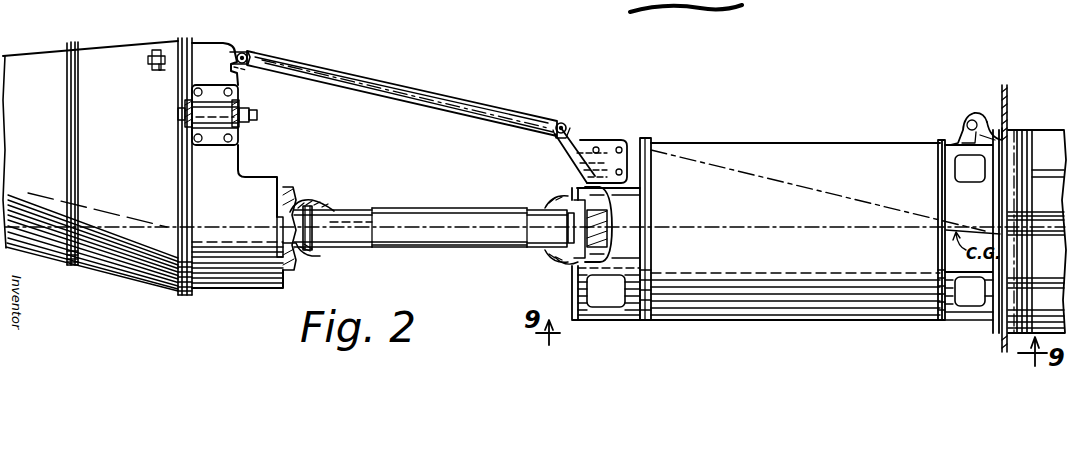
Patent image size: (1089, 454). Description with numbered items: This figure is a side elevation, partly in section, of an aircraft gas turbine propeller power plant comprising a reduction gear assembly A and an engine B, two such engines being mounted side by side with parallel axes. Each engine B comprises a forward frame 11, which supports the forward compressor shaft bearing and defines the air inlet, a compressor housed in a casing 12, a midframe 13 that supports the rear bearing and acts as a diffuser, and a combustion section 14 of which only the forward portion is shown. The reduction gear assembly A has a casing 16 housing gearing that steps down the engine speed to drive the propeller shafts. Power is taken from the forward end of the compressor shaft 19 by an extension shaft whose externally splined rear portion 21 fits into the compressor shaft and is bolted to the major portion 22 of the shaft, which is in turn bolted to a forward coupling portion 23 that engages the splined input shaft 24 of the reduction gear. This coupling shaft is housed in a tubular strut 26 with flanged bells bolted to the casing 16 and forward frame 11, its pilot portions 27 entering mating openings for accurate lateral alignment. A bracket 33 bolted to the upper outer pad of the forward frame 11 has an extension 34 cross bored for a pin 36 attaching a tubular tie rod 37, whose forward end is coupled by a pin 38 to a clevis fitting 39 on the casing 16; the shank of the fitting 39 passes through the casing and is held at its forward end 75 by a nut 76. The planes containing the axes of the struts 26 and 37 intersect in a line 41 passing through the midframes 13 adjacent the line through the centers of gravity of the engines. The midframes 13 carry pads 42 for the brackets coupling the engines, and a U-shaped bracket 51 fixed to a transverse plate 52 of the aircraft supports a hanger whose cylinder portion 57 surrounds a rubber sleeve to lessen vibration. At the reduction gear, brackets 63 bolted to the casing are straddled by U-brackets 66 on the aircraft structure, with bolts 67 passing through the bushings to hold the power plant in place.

The reduction gear assembly A is at (96, 40).
The engine B is at (838, 142).
The forward frame 11 is at (622, 302).
The compressor casing 12 is at (812, 212).
The midframe 13 is at (950, 146).
The combustion section 14 is at (1048, 146).
The reduction gear casing 16 is at (128, 262).
The compressor shaft 19 is at (598, 248).
The rear portion of extension shaft 21 is at (574, 218).
The major portion of the shaft 22 is at (352, 238).
The forward coupling portion 23 is at (294, 242).
The input shaft 24 is at (277, 218).
The tubular column or strut 26 is at (412, 210).
The pilot portion 27 is at (300, 204).
The bracket 33 is at (608, 160).
The extension 34 is at (574, 142).
The pin 36 is at (562, 124).
The strut or tie rod 37 is at (430, 97).
The pin 38 is at (249, 55).
The clevis fitting 39 is at (240, 54).
The line of intersection 41 is at (975, 228).
The pad 42 is at (608, 290).
The U-shaped bracket 51 is at (988, 114).
The transverse plate 52 is at (1008, 104).
The cylinder portion of the hanger 57 is at (964, 116).
The bracket 63 is at (238, 85).
The U-bracket 66 is at (242, 128).
The bolt 67 is at (182, 117).
The forward end of shank 75 is at (148, 62).
The nut 76 is at (158, 50).